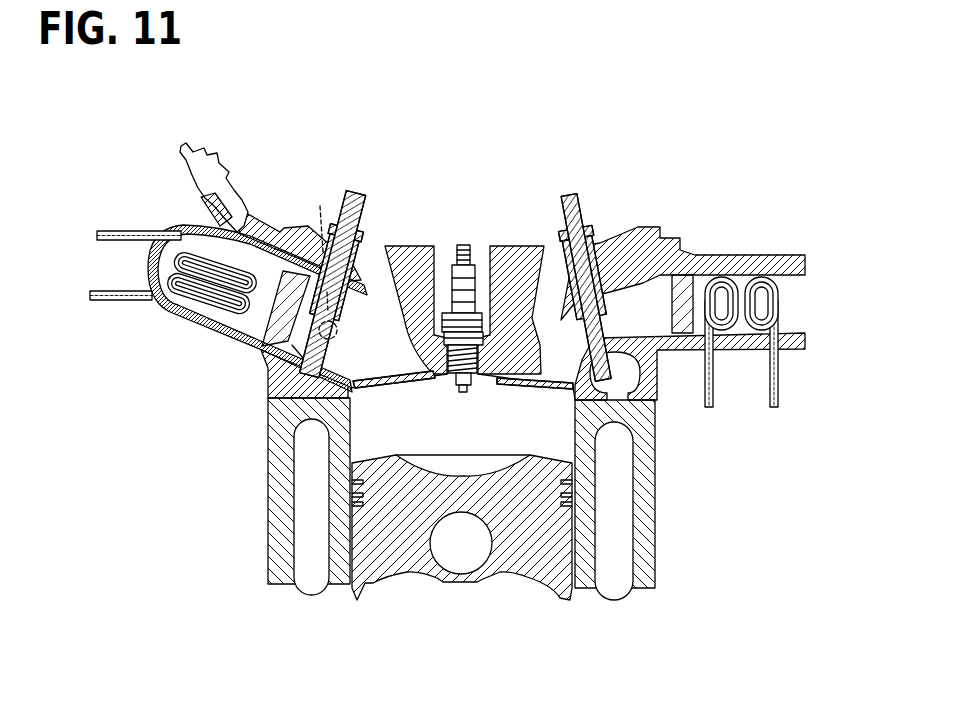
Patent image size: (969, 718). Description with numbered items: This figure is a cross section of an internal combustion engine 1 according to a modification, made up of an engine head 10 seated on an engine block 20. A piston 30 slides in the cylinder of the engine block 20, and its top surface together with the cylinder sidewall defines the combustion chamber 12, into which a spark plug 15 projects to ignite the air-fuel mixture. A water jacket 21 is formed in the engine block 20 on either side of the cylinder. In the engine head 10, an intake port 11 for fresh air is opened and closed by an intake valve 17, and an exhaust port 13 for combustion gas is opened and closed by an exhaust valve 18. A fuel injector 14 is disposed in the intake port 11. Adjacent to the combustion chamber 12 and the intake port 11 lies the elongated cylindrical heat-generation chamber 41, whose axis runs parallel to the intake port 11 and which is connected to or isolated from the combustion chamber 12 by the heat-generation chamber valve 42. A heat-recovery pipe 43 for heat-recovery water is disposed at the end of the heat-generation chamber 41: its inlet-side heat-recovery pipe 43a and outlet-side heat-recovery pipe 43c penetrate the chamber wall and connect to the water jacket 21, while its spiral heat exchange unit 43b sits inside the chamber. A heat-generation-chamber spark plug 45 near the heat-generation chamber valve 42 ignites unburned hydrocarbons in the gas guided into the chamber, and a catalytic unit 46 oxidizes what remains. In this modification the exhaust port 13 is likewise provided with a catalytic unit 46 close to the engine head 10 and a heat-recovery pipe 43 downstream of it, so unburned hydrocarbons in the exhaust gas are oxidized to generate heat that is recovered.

The internal combustion engine 1 is at (657, 118).
The engine head 10 is at (489, 274).
The intake port 11 is at (200, 220).
The combustion chamber 12 is at (474, 438).
The exhaust port 13 is at (796, 296).
The fuel injector 14 is at (183, 145).
The spark plug 15 is at (462, 243).
The intake valve 17 is at (367, 260).
The exhaust valve 18 is at (563, 195).
The engine block 20 is at (456, 499).
The water jacket 21 is at (310, 488).
The piston 30 is at (506, 571).
The heat-generation chamber 41 is at (268, 377).
The heat-generation chamber valve 42 is at (346, 190).
The heat-recovery pipe 43 is at (395, 290).
The inlet-side heat-recovery pipe 43a is at (97, 232).
The heat exchange unit 43b is at (197, 300).
The outlet-side heat-recovery pipe 43c is at (158, 283).
The heat-generation-chamber spark plug 45 is at (321, 261).
The catalytic unit 46 is at (290, 242).